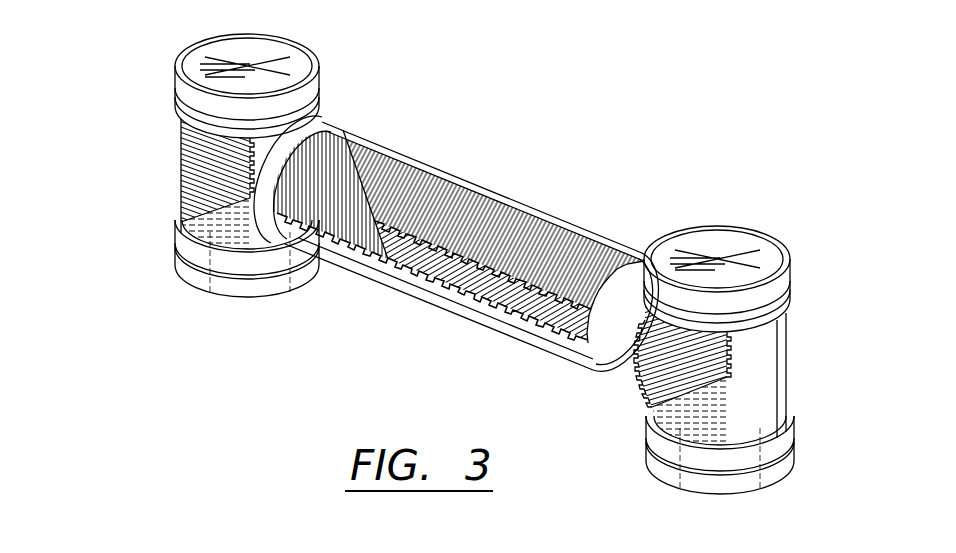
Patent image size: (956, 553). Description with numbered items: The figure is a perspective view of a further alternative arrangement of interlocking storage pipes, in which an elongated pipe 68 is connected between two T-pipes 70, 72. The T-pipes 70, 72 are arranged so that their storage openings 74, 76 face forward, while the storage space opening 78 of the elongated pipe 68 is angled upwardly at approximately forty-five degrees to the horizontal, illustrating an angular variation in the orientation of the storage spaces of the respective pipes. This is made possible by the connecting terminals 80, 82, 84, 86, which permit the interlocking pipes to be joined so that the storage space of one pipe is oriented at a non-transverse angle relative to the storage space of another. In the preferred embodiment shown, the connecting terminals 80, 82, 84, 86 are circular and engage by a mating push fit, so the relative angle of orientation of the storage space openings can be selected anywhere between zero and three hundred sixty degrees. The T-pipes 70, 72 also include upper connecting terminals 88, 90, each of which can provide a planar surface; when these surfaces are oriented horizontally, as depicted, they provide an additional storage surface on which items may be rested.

The elongated pipe 68 is at (456, 213).
The T-pipe 70 is at (180, 127).
The T-pipe 72 is at (795, 358).
The storage opening 74 is at (182, 202).
The storage opening 76 is at (648, 425).
The storage space opening 78 is at (493, 282).
The connecting terminal 80 is at (397, 130).
The connecting terminal 82 is at (587, 352).
The connecting terminal 84 is at (607, 228).
The connecting terminal 86 is at (333, 128).
The upper connecting terminal 88 is at (268, 82).
The upper connecting terminal 90 is at (730, 265).